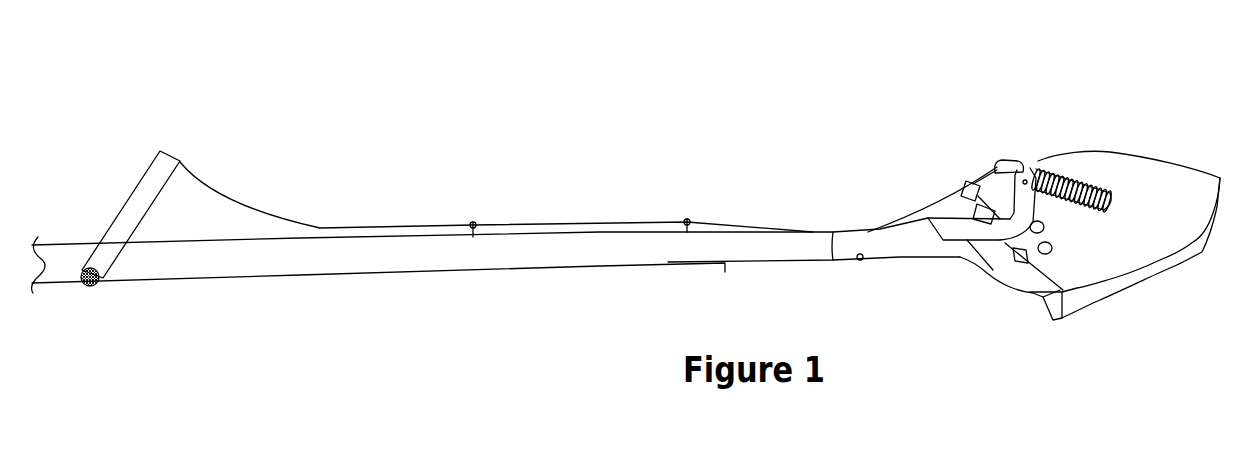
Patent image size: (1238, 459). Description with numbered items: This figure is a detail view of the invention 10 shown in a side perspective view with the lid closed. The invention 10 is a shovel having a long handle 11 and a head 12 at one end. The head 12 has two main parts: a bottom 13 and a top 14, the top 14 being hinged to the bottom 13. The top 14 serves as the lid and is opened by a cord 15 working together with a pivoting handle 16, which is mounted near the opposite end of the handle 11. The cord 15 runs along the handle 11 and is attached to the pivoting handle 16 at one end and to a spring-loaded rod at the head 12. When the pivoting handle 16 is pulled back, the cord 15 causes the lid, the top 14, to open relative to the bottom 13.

The invention 10 is at (596, 197).
The handle 11 is at (493, 275).
The head 12 is at (1120, 135).
The bottom 13 is at (1157, 283).
The top 14 is at (1162, 172).
The cord 15 is at (245, 198).
The pivoting handle 16 is at (110, 230).